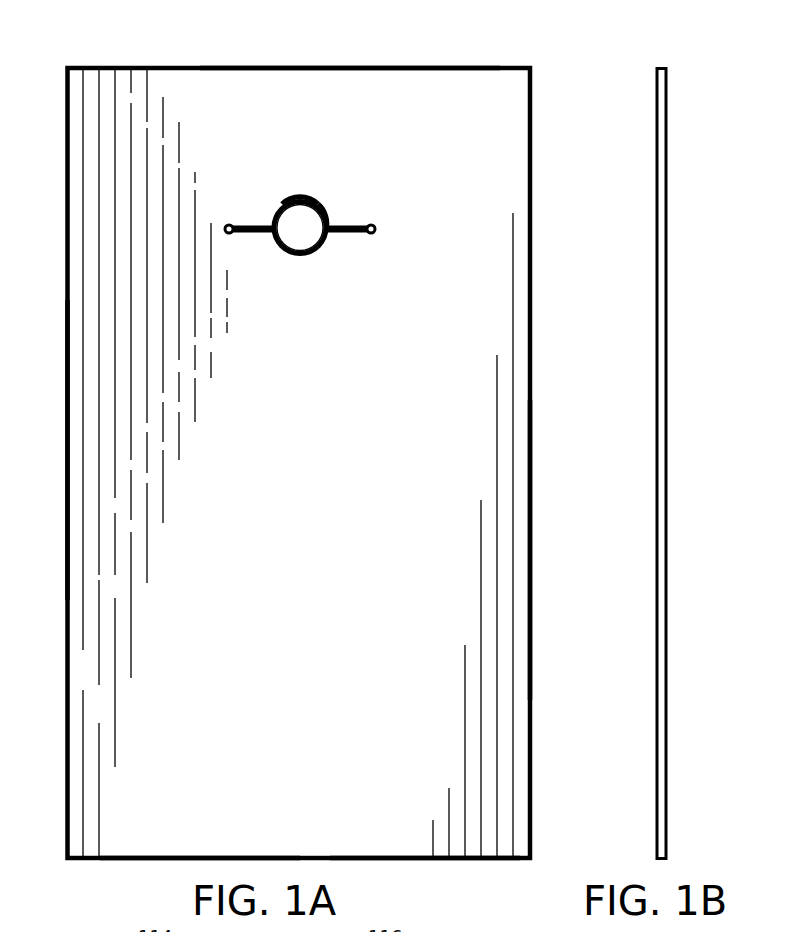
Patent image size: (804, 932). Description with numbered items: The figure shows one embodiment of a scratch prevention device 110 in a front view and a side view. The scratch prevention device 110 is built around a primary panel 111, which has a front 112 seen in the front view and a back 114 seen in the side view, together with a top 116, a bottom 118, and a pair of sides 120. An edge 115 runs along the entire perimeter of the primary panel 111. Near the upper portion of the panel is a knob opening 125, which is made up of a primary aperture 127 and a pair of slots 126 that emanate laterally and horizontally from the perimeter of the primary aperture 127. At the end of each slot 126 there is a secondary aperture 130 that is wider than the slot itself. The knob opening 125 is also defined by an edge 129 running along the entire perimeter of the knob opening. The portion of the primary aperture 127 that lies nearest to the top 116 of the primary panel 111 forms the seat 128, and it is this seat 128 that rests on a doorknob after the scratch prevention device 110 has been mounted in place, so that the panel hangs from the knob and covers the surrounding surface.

In FIG. 1A, the scratch prevention device 110 is at (186, 34).
In FIG. 1A, the primary panel 111 is at (656, 398).
In FIG. 1A, the front 112 is at (495, 284).
In FIG. 1B, the back 114 is at (667, 302).
In FIG. 1A, the edge 115 is at (423, 861).
In FIG. 1A, the top 116 is at (345, 67).
In FIG. 1A, the bottom 118 is at (158, 861).
In FIG. 1A, the sides 120 is at (65, 435).
In FIG. 1A, the knob opening 125 is at (326, 218).
In FIG. 1A, the slots 126 is at (248, 234).
In FIG. 1A, the primary aperture 127 is at (295, 210).
In FIG. 1A, the seat 128 is at (305, 204).
In FIG. 1A, the edge 129 is at (318, 250).
In FIG. 1A, the secondary aperture 130 is at (232, 224).